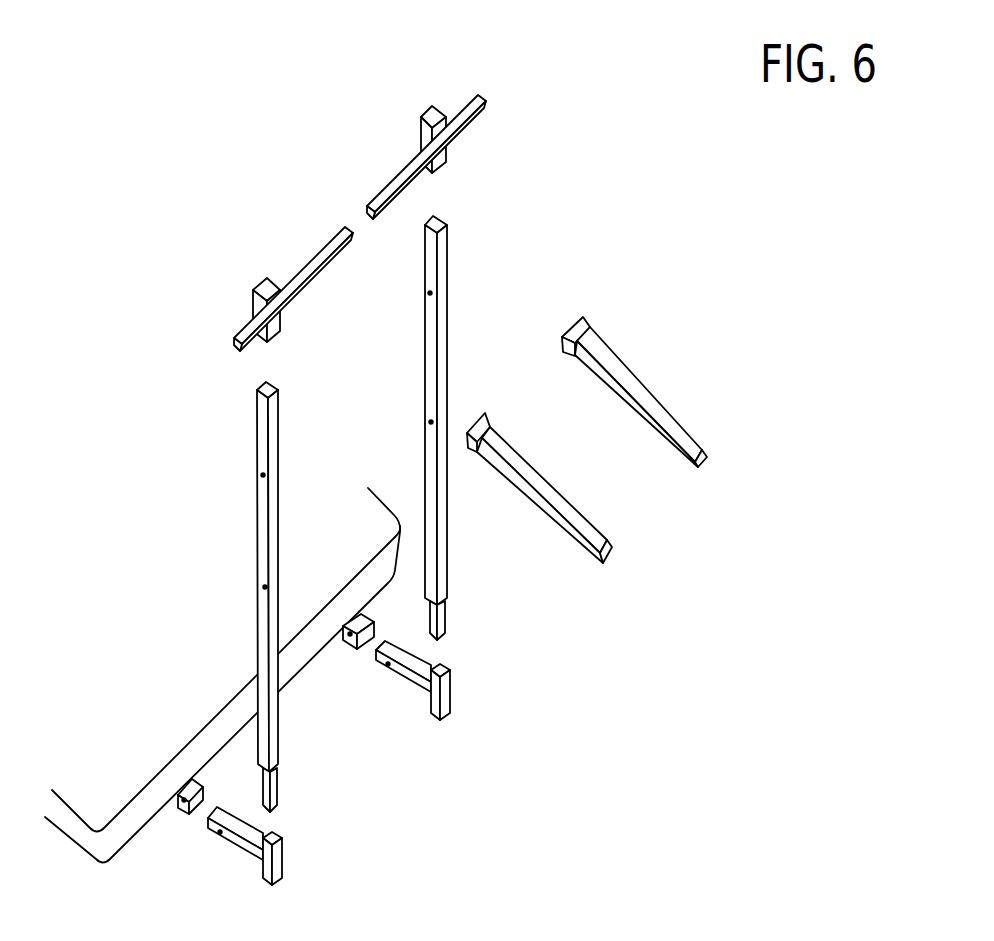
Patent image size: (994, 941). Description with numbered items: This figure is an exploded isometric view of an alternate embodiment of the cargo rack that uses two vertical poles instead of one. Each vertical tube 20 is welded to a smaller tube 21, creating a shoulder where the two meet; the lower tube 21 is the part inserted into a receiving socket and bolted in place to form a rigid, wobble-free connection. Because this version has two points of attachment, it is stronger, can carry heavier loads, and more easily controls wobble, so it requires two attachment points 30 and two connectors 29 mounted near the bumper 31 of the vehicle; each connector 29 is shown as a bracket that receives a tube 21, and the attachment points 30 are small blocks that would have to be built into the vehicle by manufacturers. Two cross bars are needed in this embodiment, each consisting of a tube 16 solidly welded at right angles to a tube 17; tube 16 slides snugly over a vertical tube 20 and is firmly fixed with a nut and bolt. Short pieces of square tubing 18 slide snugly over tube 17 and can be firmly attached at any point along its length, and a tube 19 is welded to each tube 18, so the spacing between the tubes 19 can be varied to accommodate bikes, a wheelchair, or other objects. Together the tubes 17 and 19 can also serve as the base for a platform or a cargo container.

The tube 16 is at (425, 102).
The tube 17 is at (390, 167).
The short piece of square tubing 18 is at (585, 313).
The tube 19 is at (652, 387).
The vertical tube 20 is at (452, 342).
The tube 21 is at (452, 613).
The connector 29 is at (455, 693).
The attachment point 30 is at (353, 647).
The bumper 31 is at (205, 723).